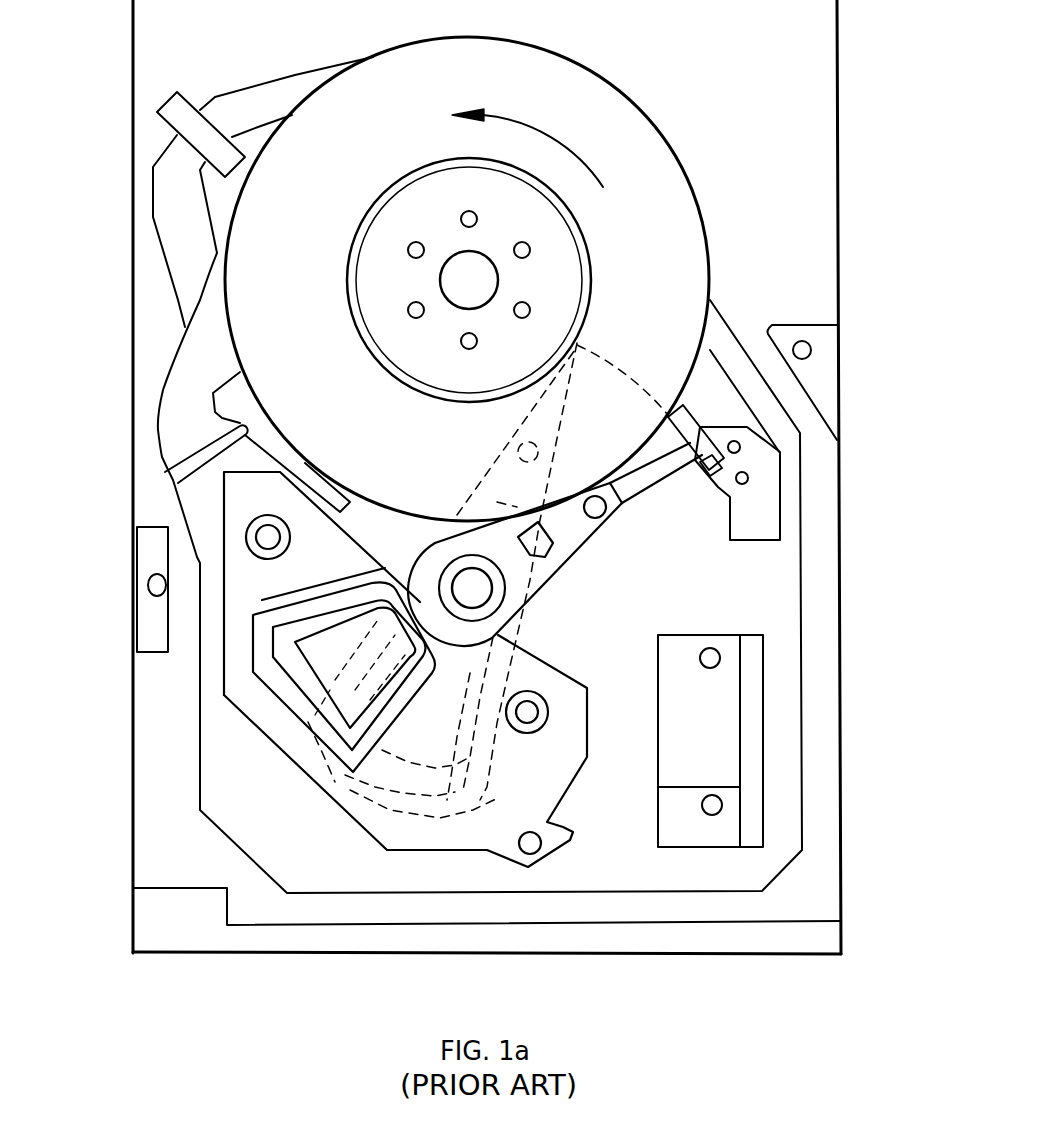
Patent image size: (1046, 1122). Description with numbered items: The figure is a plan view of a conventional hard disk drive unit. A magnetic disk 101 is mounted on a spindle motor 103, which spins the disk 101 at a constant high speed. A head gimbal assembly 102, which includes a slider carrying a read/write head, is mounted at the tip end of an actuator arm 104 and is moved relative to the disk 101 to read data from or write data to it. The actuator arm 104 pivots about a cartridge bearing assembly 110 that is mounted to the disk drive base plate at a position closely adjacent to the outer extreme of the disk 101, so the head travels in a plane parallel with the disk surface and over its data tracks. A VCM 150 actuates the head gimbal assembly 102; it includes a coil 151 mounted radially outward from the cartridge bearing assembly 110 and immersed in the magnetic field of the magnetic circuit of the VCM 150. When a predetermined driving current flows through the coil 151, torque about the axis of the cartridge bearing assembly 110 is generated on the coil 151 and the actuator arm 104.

The magnetic disk 101 is at (511, 477).
The head gimbal assembly 102 is at (792, 472).
The spindle motor 103 is at (487, 279).
The actuator arm 104 is at (676, 546).
The cartridge bearing assembly 110 is at (679, 694).
The VCM 150 is at (280, 773).
The coil 151 is at (237, 679).